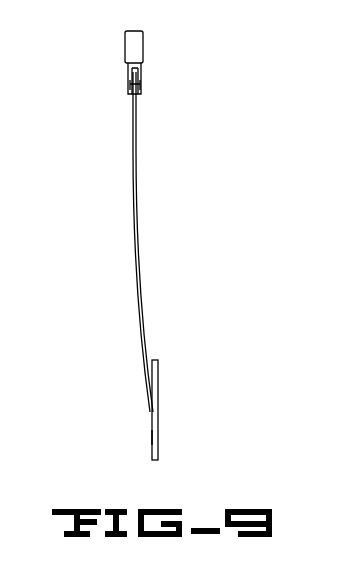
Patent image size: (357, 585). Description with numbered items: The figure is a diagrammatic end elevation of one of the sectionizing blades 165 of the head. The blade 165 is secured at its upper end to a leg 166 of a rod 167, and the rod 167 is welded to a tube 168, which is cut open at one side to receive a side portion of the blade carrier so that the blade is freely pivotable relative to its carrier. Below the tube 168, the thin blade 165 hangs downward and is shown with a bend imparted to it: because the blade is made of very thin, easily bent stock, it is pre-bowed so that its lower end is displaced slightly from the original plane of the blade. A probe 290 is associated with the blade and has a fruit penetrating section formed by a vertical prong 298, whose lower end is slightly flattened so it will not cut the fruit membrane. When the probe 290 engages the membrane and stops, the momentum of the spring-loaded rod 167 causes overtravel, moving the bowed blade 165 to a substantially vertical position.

The tube 168 is at (133, 43).
The rod 167 is at (128, 67).
The leg 166 is at (130, 91).
The sectionizing blade 165 is at (133, 223).
The probe 290 is at (138, 439).
The vertical prong 298 is at (158, 449).